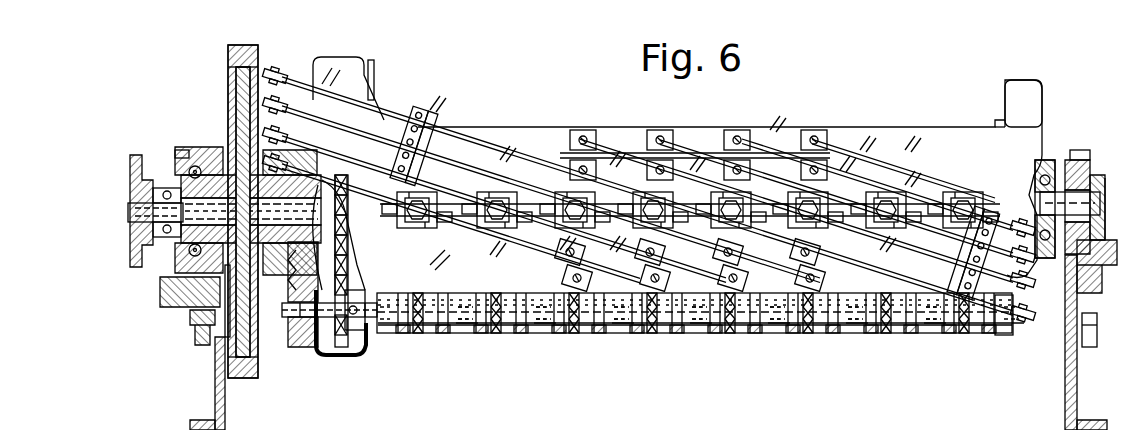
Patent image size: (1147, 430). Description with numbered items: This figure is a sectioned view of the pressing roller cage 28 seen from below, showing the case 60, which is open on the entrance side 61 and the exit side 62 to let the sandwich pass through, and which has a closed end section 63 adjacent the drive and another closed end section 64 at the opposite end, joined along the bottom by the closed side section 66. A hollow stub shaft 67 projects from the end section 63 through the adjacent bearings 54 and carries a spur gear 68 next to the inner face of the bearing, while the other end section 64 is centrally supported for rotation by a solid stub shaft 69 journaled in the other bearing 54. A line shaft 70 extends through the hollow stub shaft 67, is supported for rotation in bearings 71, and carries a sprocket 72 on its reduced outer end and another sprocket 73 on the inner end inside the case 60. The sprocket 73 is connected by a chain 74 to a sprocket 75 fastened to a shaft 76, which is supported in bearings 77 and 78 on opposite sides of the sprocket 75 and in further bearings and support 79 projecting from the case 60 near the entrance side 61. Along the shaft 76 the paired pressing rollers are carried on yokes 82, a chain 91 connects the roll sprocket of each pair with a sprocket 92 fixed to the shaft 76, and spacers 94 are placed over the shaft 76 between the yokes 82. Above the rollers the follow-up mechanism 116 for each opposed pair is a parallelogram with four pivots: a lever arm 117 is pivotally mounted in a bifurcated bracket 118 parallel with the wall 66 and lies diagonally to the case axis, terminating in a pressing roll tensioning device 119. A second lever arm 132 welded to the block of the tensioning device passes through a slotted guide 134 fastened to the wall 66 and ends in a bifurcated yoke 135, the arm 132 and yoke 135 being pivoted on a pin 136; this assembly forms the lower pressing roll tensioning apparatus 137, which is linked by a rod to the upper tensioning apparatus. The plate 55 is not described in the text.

The pressing roller cage 28 is at (502, 72).
The bearings 54 is at (192, 147).
The side plate 55 is at (212, 388).
The case 60 is at (958, 124).
The entrance side 61 is at (683, 340).
The exit side 62 is at (932, 125).
The closed end section 63 is at (282, 84).
The closed end section 64 is at (1040, 95).
The second closed side section 66 is at (893, 145).
The hollow stub shaft 67 is at (285, 248).
The spur gear 68 is at (258, 370).
The solid stub shaft 69 is at (1098, 195).
The line shaft 70 is at (128, 207).
The bearings 71 is at (168, 236).
The sprocket 72 is at (131, 170).
The sprocket 73 is at (365, 243).
The chain 74 is at (350, 262).
The sprocket 75 is at (353, 366).
The shaft 76 is at (295, 325).
The bearing 77 is at (320, 362).
The bearing 78 is at (362, 300).
The bearings and support 79 is at (1005, 330).
The yoke 82 is at (405, 333).
The chain 91 is at (425, 333).
The sprocket 92 is at (418, 335).
The spacers 94 is at (386, 330).
The follow-up mechanism 116 is at (500, 130).
The lever arm 117 is at (606, 150).
The bifurcated bracket 118 is at (578, 130).
The pressing roll tensioning device 119 is at (500, 200).
The second lever arm 132 is at (364, 104).
The slotted guide 134 is at (422, 125).
The bifurcated yoke 135 is at (268, 70).
The pin 136 is at (288, 76).
The lower pressing roll tensioning apparatus 137 is at (470, 240).